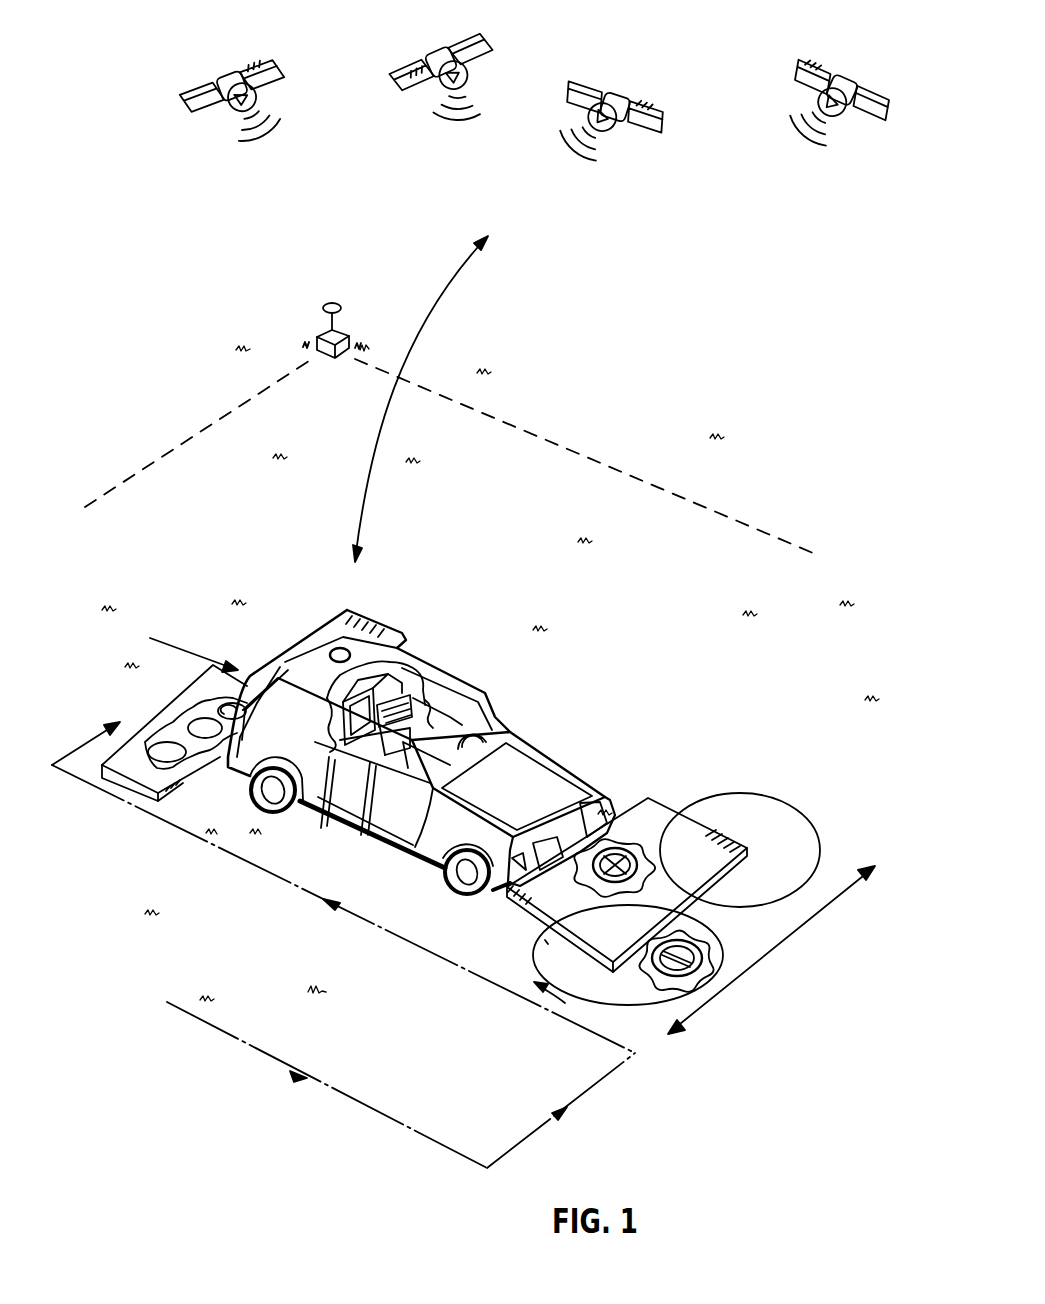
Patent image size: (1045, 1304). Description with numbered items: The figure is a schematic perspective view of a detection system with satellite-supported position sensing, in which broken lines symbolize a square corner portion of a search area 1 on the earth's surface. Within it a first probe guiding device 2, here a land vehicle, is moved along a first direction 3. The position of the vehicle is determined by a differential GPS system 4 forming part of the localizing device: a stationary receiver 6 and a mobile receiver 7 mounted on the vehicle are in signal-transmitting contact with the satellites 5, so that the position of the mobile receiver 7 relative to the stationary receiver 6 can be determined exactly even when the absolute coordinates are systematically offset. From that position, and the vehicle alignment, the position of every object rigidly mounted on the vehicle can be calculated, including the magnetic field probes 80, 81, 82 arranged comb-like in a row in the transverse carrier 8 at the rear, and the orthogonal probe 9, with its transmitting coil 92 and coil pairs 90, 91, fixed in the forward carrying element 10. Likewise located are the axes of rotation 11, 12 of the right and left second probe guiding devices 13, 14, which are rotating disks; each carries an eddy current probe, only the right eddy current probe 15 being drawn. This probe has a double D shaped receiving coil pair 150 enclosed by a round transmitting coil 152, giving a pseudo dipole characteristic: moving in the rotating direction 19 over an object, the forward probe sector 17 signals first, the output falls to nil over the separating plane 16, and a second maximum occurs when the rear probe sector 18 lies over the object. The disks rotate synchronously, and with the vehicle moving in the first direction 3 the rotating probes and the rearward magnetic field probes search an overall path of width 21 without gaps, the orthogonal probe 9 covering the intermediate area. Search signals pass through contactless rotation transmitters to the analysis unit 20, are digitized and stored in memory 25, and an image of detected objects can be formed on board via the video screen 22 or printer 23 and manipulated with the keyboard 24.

The search area 1 is at (207, 460).
The first probe guiding device 2 is at (379, 872).
The first direction 3 is at (183, 643).
The differential GPS system 4 is at (348, 364).
The satellites 5 is at (236, 72).
The stationary receiver 6 is at (344, 332).
The mobile receiver 7 is at (328, 640).
The transverse carrier 8 is at (147, 758).
The magnetic field probe 80 is at (170, 794).
The magnetic field probe 81 is at (192, 718).
The magnetic field probe 82 is at (235, 702).
The orthogonal probe 9 is at (620, 838).
The coil pair 90 is at (652, 872).
The coil pair 91 is at (618, 884).
The transmitting coil 92 is at (588, 876).
The forward carrying element 10 is at (508, 903).
The right axis of rotation 11 is at (612, 940).
The left axis of rotation 12 is at (708, 838).
The right second probe guiding device 13 is at (546, 942).
The left second probe guiding device 14 is at (772, 806).
The eddy current probe 15 is at (637, 975).
The double D shaped receiving coil pair 150 is at (688, 964).
The transmitting coil 152 is at (678, 978).
The separating plane 16 is at (702, 962).
The forward probe sector 17 is at (655, 985).
The rear probe sector 18 is at (700, 935).
The rotating direction 19 is at (550, 1000).
The analysis unit 20 is at (318, 806).
The width 21 is at (788, 945).
The video screen 22 is at (336, 724).
The printer 23 is at (385, 676).
The keyboard 24 is at (432, 684).
The memory 25 is at (358, 816).